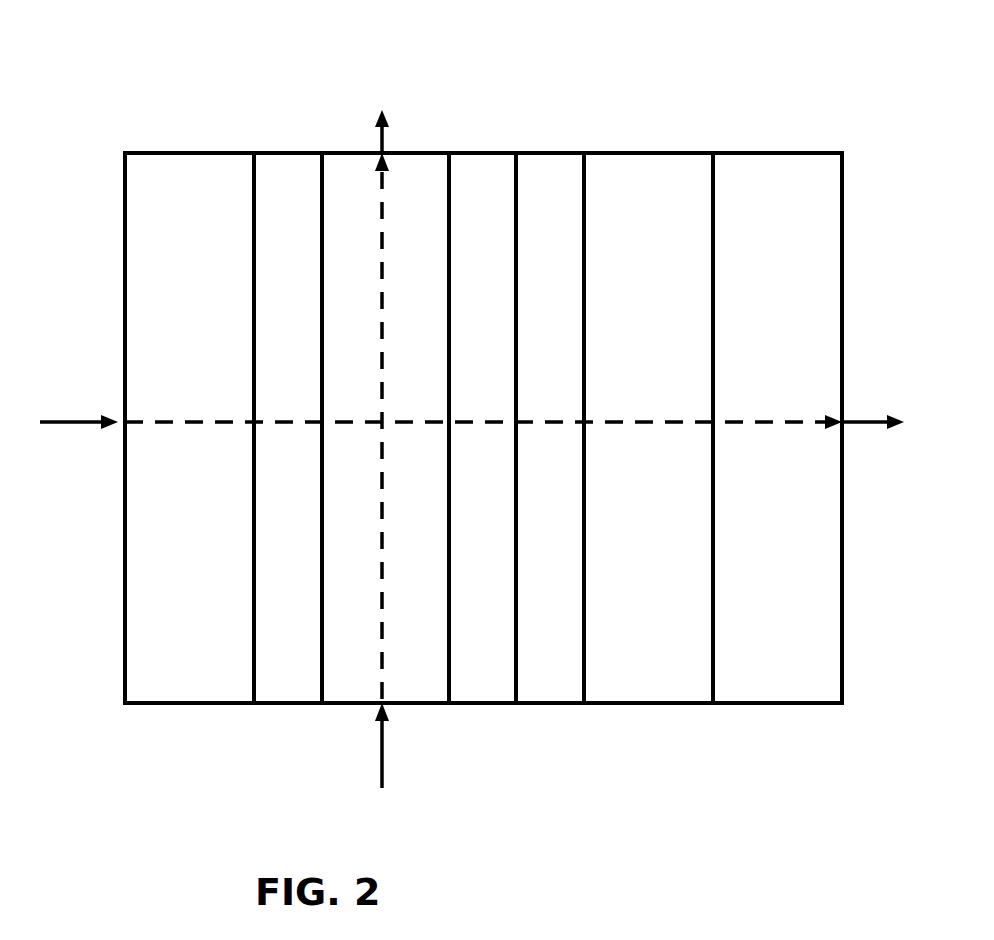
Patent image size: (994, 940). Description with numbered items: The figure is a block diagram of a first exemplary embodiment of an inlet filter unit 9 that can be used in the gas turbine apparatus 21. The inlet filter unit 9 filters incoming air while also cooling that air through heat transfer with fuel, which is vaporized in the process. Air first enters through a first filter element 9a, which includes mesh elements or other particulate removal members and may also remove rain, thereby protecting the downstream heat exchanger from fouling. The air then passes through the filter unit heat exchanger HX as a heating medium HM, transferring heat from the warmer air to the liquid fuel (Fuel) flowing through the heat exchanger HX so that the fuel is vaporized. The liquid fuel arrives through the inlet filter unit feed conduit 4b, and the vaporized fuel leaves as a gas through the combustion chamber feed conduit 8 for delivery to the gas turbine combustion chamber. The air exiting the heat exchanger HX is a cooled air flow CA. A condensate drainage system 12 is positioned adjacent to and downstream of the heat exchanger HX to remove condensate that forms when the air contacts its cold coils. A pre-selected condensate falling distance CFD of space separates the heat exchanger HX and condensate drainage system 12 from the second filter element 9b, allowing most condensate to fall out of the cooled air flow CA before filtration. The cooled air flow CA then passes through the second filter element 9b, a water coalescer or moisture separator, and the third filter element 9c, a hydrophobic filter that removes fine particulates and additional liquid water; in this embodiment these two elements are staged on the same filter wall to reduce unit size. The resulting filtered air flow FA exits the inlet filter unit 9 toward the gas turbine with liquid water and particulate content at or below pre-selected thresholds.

The inlet filter unit 9 is at (708, 755).
The gas turbine apparatus 21 is at (771, 753).
The first filter element 9a is at (171, 192).
The second filter element 9b is at (628, 192).
The third filter element 9c is at (757, 192).
The heating medium HM is at (300, 418).
The filter unit heat exchanger HX is at (373, 192).
The condensate drainage system 12 is at (492, 192).
The condensate falling distance CFD is at (577, 153).
The air Air is at (101, 418).
The cooled air flow CA is at (540, 418).
The filtered air flow FA is at (880, 418).
The fuel Fuel is at (383, 552).
The combustion chamber feed conduit 8 is at (384, 139).
The inlet filter unit feed conduit 4b is at (383, 748).